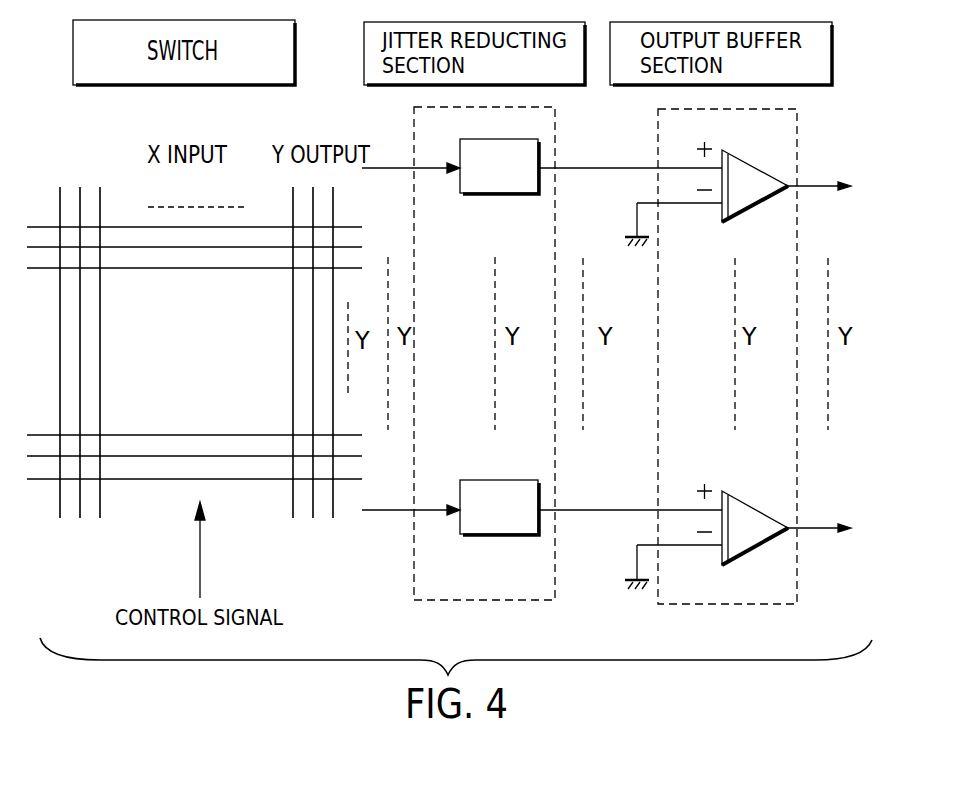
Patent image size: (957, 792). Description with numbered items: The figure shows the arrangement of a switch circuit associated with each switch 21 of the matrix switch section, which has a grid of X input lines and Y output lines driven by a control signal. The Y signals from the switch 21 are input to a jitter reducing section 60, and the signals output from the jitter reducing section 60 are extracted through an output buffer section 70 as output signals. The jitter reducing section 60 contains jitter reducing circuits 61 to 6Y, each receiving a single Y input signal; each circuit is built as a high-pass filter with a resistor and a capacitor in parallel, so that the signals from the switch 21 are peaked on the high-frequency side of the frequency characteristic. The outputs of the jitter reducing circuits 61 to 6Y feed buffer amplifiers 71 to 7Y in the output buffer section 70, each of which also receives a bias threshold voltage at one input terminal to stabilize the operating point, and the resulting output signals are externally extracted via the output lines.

The switch 21 is at (331, 527).
The jitter reducing section 60 is at (414, 580).
The jitter reducing circuit 61 is at (493, 194).
The jitter reducing circuit 6Y is at (493, 535).
The output buffer section 70 is at (727, 610).
The buffer amplifier 71 is at (744, 158).
The buffer amplifier 7Y is at (744, 500).